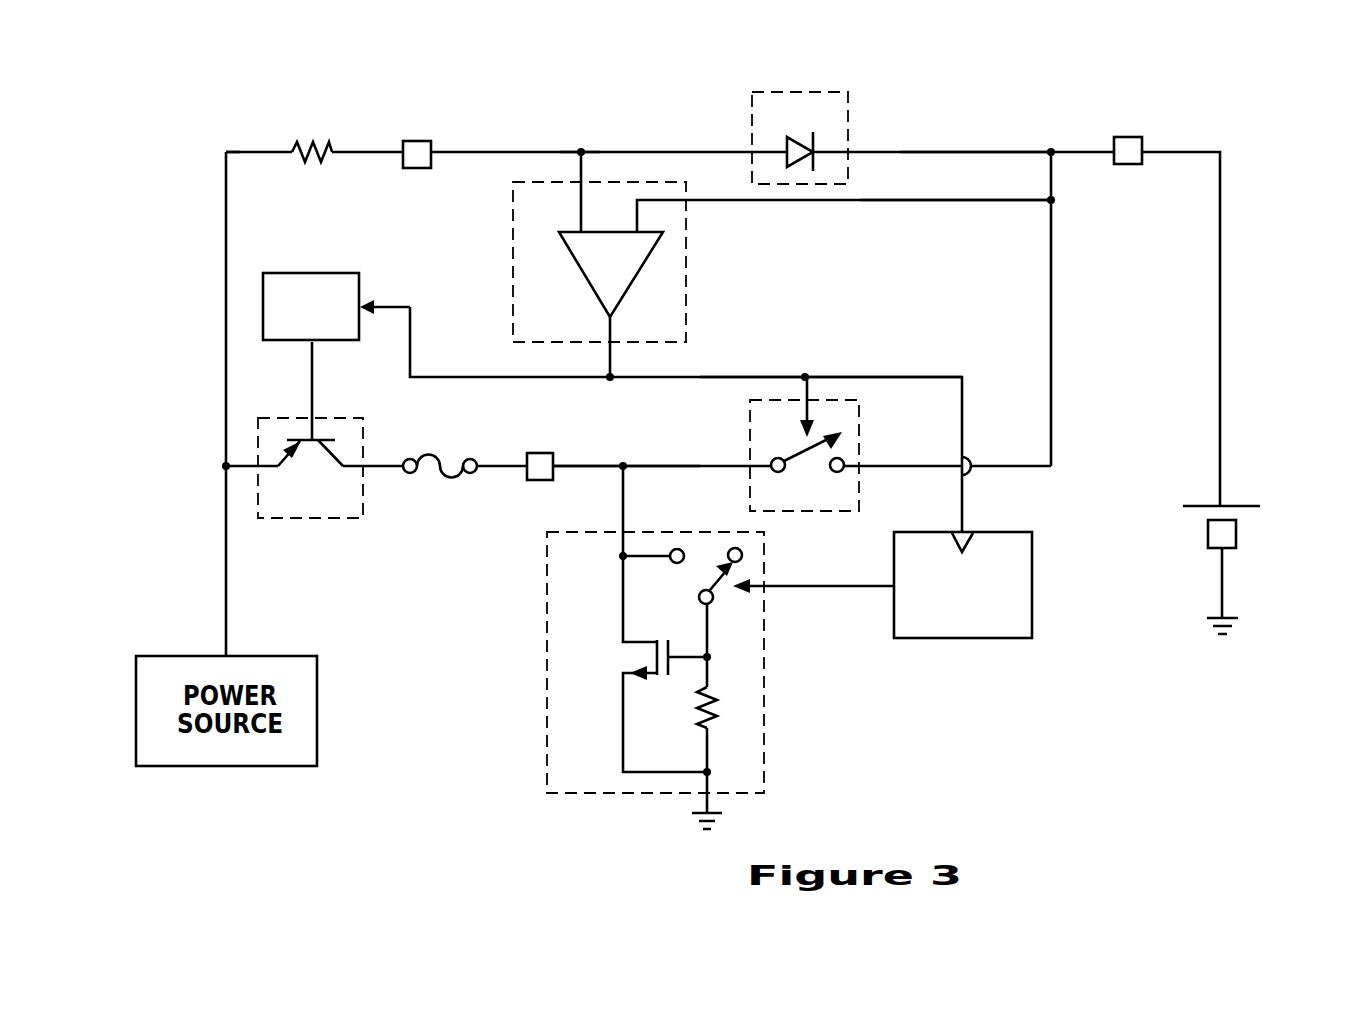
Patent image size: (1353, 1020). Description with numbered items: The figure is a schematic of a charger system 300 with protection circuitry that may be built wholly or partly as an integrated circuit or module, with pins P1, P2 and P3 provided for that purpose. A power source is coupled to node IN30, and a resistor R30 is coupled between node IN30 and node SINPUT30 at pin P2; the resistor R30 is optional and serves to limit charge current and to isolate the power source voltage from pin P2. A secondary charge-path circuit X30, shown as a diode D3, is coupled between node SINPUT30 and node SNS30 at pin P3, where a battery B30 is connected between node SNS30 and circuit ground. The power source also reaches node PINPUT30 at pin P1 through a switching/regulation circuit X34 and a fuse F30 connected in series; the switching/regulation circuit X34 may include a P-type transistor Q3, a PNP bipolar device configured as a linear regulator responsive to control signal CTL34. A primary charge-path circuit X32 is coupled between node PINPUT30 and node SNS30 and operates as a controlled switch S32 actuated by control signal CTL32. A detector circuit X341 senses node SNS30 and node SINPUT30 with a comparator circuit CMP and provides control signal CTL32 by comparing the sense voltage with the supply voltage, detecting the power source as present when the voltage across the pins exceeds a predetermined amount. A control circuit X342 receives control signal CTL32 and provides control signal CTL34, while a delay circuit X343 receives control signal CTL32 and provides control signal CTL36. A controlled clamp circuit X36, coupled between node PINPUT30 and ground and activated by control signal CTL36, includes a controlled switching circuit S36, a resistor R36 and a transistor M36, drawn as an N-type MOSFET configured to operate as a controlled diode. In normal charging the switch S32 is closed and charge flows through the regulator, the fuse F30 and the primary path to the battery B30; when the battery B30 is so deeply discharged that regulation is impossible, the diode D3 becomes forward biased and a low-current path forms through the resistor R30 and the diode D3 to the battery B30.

The charger system 300 is at (234, 62).
The node IN30 is at (222, 152).
The resistor R30 is at (312, 137).
The pin P2 is at (414, 135).
The node SINPUT30 is at (581, 150).
The secondary charge-path circuit X30 is at (800, 116).
The diode D3 is at (801, 135).
The node SNS30 is at (940, 150).
The pin P3 is at (1130, 133).
The control circuit X342 is at (309, 273).
The detector circuit X341 is at (653, 262).
The comparator circuit CMP is at (572, 263).
The control signal CTL32 is at (837, 377).
The primary charge-path circuit X32 is at (846, 451).
The switch S32 is at (807, 468).
The control signal CTL34 is at (313, 389).
The switching/regulation circuit X34 is at (310, 486).
The P-type transistor Q3 is at (310, 469).
The fuse circuit F30 is at (440, 483).
The pin P1 is at (536, 449).
The node PINPUT30 is at (586, 460).
The controlled clamp circuit X36 is at (703, 680).
The controlled switching circuit S36 is at (693, 576).
The transistor M36 is at (637, 660).
The resistor R36 is at (681, 707).
The control signal CTL36 is at (778, 585).
The delay circuit X343 is at (935, 639).
The battery B30 is at (1236, 533).